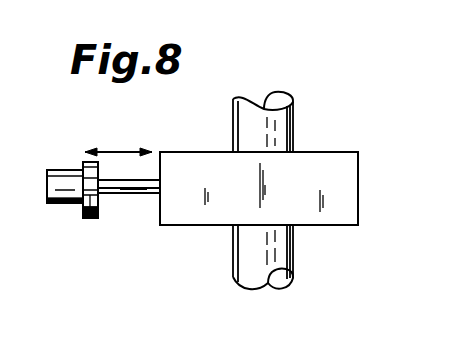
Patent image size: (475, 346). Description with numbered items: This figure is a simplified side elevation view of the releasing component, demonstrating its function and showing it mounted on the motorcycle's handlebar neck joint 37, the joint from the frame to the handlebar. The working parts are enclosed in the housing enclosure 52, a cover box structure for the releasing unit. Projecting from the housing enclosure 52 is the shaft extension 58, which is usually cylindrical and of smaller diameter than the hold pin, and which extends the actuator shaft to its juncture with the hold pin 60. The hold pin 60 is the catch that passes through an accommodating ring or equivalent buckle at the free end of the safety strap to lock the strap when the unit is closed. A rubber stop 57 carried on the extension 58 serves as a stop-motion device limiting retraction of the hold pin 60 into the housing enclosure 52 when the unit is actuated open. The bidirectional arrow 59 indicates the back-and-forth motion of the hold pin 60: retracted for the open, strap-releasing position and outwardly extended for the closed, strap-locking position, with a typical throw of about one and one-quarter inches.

The neck joint 37 is at (293, 125).
The housing enclosure 52 is at (358, 185).
The rubber stop 57 is at (90, 218).
The shaft extension 58 is at (130, 197).
The bidirectional arrow 59 is at (122, 150).
The hold pin 60 is at (48, 203).